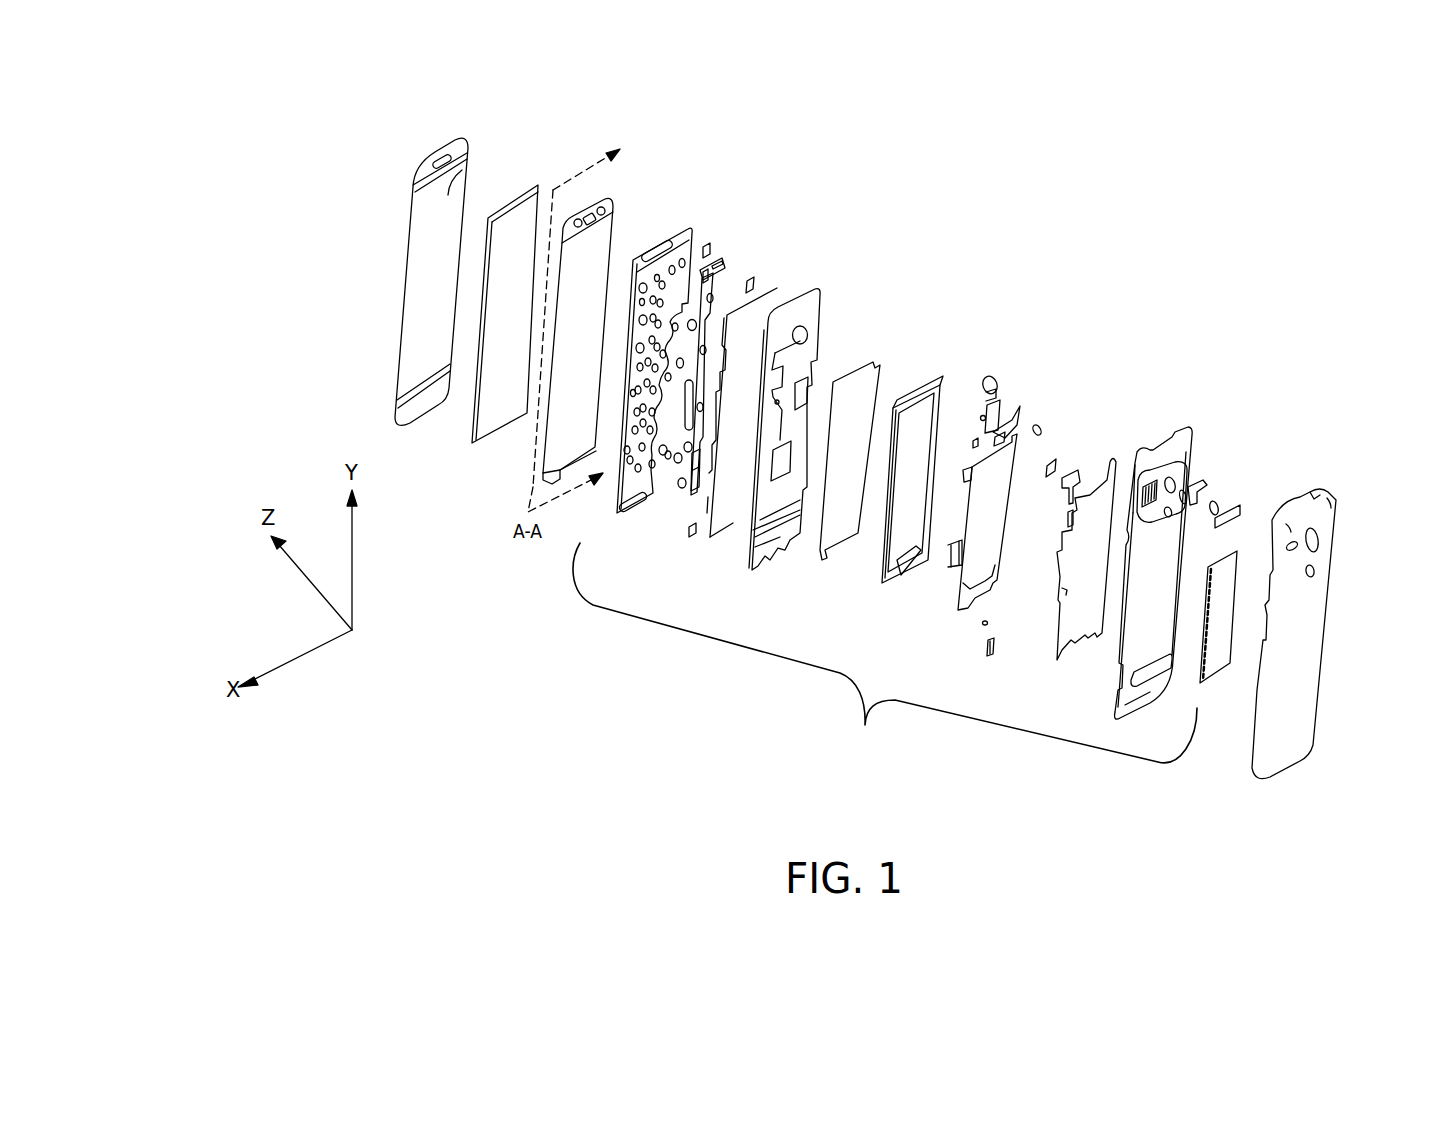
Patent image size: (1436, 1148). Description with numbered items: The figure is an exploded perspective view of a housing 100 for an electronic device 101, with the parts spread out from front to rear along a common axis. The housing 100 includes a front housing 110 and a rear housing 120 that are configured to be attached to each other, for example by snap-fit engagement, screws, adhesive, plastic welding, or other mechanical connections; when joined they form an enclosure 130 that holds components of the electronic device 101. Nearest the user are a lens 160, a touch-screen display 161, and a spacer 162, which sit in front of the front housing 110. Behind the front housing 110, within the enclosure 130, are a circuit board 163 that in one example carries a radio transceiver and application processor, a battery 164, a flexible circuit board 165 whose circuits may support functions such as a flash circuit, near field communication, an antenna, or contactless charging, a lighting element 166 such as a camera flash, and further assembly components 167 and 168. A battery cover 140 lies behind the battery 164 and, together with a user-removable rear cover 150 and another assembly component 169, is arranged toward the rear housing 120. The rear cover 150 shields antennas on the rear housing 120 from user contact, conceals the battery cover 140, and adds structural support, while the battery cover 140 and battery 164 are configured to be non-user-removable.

The housing 100 is at (927, 305).
The electronic device 101 is at (504, 667).
The front housing 110 is at (613, 485).
The rear housing 120 is at (1187, 432).
The enclosure 130 is at (885, 653).
The battery cover 140 is at (1072, 618).
The rear cover 150 is at (1290, 698).
The lens 160 is at (468, 157).
The touch-screen display 161 is at (490, 414).
The spacer 162 is at (612, 206).
The circuit board 163 is at (788, 512).
The battery 164 is at (921, 420).
The flexible circuit board 165 is at (918, 632).
The lighting element 166 is at (1055, 452).
The assembly component 167 is at (675, 543).
The assembly component 168 is at (807, 578).
The assembly component 169 is at (1243, 483).